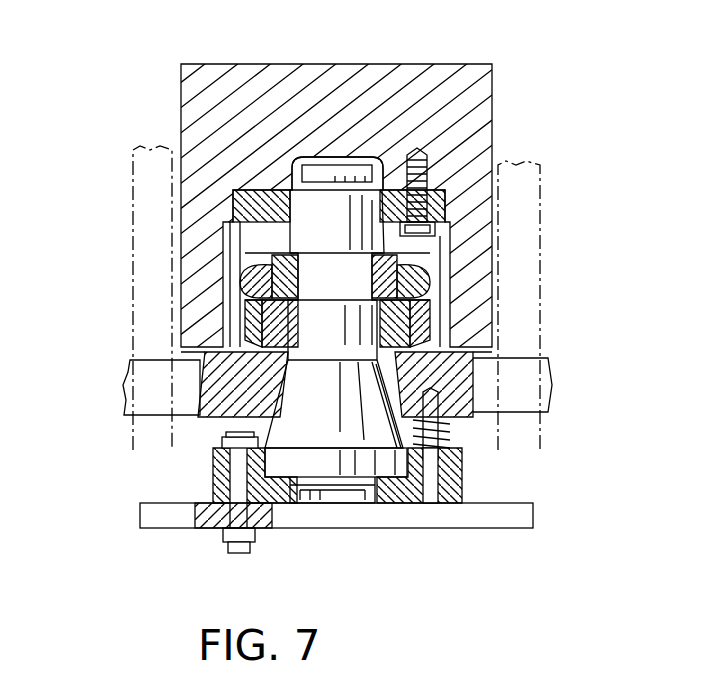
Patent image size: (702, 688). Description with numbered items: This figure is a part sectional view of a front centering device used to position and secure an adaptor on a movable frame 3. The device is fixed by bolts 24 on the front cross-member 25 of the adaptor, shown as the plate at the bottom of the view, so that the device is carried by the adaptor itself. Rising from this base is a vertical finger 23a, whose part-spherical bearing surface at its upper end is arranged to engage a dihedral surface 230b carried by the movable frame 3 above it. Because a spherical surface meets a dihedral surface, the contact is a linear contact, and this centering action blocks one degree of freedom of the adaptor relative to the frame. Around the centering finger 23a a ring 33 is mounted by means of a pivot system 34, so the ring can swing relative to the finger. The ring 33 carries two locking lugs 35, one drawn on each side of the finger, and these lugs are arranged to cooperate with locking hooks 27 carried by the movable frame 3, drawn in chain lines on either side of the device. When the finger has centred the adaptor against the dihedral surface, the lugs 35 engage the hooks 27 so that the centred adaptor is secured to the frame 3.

The movable frame 3 is at (203, 66).
The vertical finger 23a is at (342, 222).
The dihedral surface 230b is at (435, 178).
The bolts 24 is at (210, 525).
The front cross-member 25 is at (315, 520).
The locking hooks 27 is at (130, 200).
The ring 33 is at (462, 405).
The pivot system 34 is at (250, 312).
The locking lugs 35 is at (135, 400).